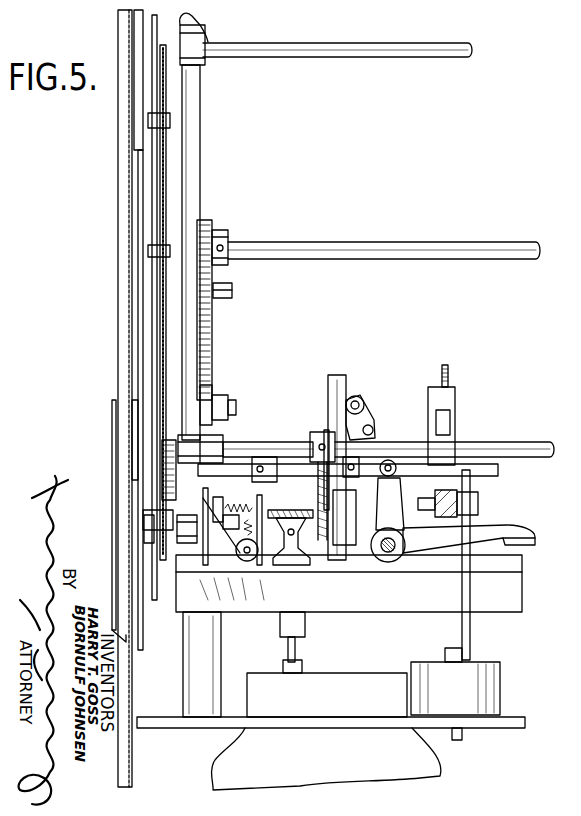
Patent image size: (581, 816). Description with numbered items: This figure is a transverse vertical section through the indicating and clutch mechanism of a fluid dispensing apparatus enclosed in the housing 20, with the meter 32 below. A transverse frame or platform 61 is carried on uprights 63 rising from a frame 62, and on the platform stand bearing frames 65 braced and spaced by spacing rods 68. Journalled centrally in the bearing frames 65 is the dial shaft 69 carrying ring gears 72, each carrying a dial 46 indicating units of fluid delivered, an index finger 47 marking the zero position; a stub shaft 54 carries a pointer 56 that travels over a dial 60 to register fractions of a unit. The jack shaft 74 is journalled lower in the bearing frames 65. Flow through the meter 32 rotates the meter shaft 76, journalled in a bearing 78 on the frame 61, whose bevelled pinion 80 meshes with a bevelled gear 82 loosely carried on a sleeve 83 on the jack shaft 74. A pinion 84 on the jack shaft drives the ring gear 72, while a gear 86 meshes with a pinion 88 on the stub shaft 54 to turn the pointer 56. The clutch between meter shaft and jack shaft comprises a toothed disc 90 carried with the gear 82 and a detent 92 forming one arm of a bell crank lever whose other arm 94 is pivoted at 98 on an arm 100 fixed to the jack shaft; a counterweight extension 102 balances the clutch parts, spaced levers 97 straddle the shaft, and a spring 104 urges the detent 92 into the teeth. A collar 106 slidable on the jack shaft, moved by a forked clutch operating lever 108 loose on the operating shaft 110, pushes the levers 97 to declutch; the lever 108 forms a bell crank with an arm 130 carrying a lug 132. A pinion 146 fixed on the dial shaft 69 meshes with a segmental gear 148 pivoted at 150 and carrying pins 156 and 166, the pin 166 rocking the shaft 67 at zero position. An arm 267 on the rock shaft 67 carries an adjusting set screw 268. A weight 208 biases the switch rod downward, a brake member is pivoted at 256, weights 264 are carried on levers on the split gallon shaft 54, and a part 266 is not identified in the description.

The housing 20 is at (132, 312).
The meter 32 is at (222, 762).
The dial 46 is at (152, 200).
The index finger 47 is at (196, 14).
The stub shaft 54 is at (142, 522).
The pointer 56 is at (131, 420).
The dial 60 is at (144, 632).
The transverse frame 61 is at (500, 592).
The frame 62 is at (496, 728).
The uprights 63 is at (198, 672).
The bearing frames 65 is at (193, 162).
The rock shaft 67 is at (530, 441).
The spacing rods 68 is at (428, 55).
The dial shaft 69 is at (412, 245).
The ring gears 72 is at (167, 196).
The jack shaft 74 is at (484, 483).
The meter shaft 76 is at (298, 649).
The bearing 78 is at (296, 558).
The bevelled pinion 80 is at (298, 509).
The bevelled gear 82 is at (312, 436).
The loose sleeve 83 is at (274, 442).
The pinion 84 is at (160, 490).
The gear 86 is at (178, 446).
The pinion 88 is at (175, 548).
The toothed disc clutch member 90 is at (330, 420).
The clutch finger 92 is at (338, 410).
The arm 94 is at (368, 410).
The levers 97 is at (374, 431).
The pivot 98 is at (362, 400).
The arm 100 is at (277, 471).
The extension 102 is at (342, 545).
The spring 104 is at (356, 478).
The collar 106 is at (394, 476).
The clutch operating lever 108 is at (398, 508).
The operating shaft 110 is at (388, 562).
The arm 130 is at (490, 528).
The lug 132 is at (536, 541).
The pinion 146 is at (214, 228).
The segmental gear 148 is at (212, 322).
The pivot 150 is at (230, 408).
The pin 156 is at (233, 290).
The pin 166 is at (230, 418).
The weight 208 is at (478, 690).
The pivot 256 is at (247, 504).
The weights 264 is at (250, 562).
The rod 266 is at (472, 510).
The arm 267 is at (456, 398).
The set screw 268 is at (450, 370).